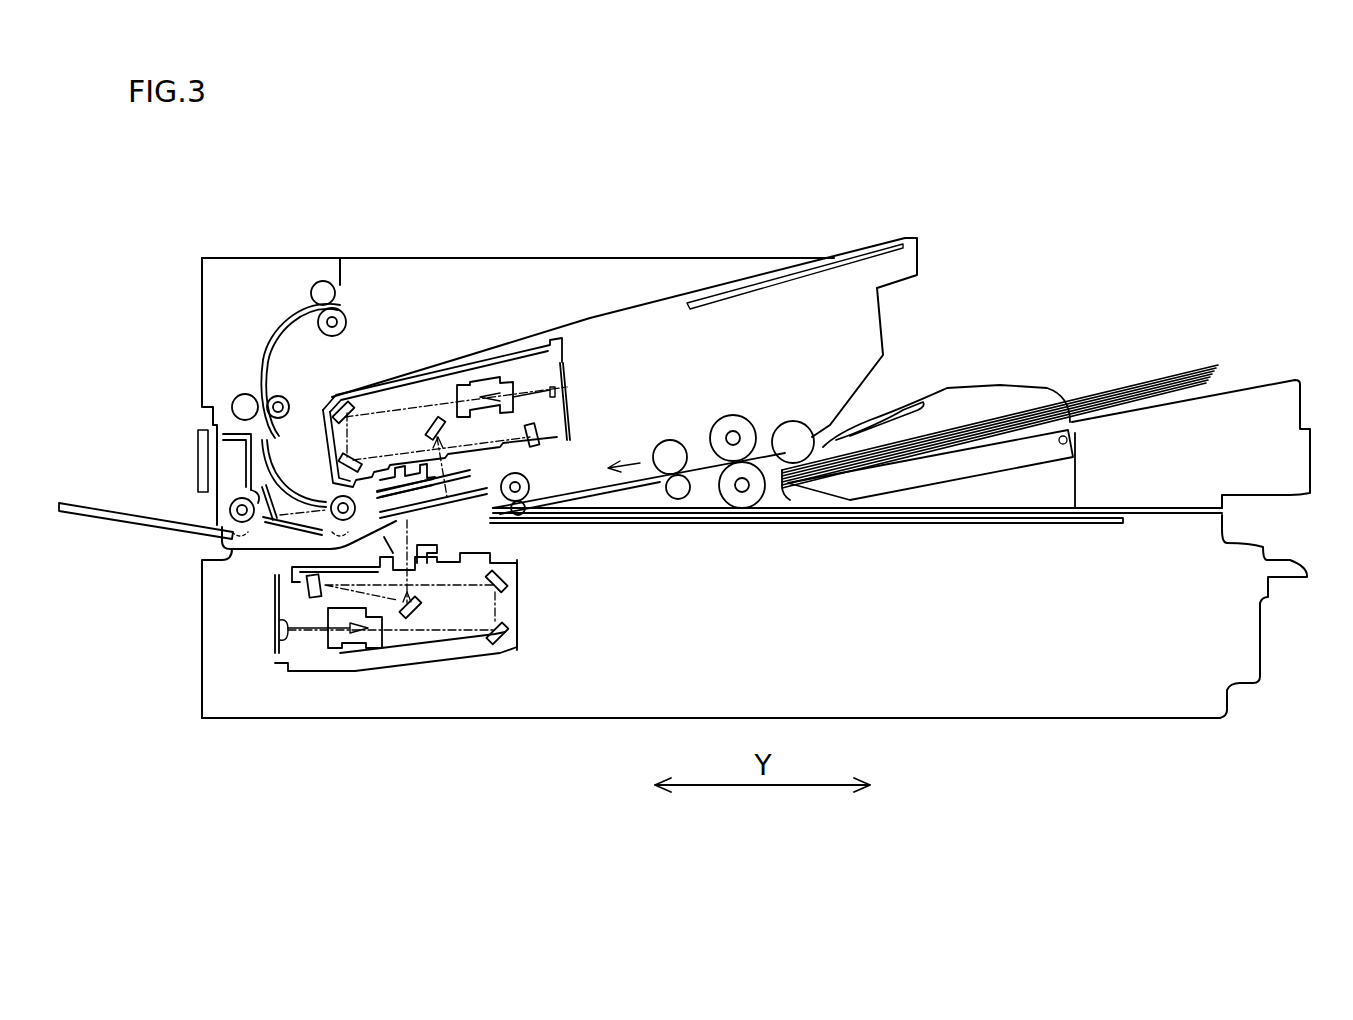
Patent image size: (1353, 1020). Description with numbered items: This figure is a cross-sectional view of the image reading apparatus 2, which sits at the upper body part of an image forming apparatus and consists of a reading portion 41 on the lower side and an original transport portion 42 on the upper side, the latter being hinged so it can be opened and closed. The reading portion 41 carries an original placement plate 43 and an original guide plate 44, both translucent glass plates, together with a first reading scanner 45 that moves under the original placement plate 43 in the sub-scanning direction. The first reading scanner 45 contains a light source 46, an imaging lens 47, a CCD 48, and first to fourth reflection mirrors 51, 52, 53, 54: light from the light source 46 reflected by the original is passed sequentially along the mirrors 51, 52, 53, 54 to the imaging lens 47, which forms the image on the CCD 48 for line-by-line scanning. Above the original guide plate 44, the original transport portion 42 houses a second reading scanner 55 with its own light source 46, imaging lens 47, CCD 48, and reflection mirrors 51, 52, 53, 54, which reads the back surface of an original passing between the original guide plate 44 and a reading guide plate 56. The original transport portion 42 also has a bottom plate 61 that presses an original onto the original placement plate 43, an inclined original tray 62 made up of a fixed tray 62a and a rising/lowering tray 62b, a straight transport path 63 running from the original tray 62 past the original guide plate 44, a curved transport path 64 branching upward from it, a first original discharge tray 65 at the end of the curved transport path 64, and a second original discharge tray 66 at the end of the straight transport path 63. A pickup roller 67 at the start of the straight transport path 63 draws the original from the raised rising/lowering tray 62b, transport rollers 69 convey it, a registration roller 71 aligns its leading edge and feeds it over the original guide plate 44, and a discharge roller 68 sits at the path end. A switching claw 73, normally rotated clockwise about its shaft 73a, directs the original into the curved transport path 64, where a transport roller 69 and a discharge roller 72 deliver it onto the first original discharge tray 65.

The image reading apparatus 2 is at (679, 127).
The reading portion 41 is at (1265, 635).
The original transport portion 42 is at (1276, 379).
The original placement plate 43 is at (1080, 525).
The original guide plate 44 is at (452, 518).
The first reading scanner 45 is at (520, 612).
The light source 46 is at (402, 470).
The imaging lens 47 is at (490, 382).
The CCD 48 is at (566, 375).
The first reflection mirror 51 is at (433, 418).
The second reflection mirror 52 is at (548, 430).
The third reflection mirror 53 is at (338, 467).
The fourth reflection mirror 54 is at (329, 402).
The second reading scanner 55 is at (455, 357).
The reading guide plate 56 is at (430, 483).
The bottom plate 61 is at (1117, 507).
The original tray 62 is at (1065, 297).
The fixed tray 62a is at (1247, 388).
The rising/lowering tray 62b is at (1035, 425).
The straight transport path 63 is at (645, 481).
The curved transport path 64 is at (280, 327).
The first original discharge tray 65 is at (583, 318).
The second original discharge tray 66 is at (112, 507).
The pickup roller 67 is at (789, 421).
The discharge roller 68 is at (230, 509).
The transport rollers 69 is at (243, 395).
The registration roller 71 is at (530, 478).
The discharge roller 72 is at (319, 281).
The switching claw 73 is at (290, 513).
The shaft 73a is at (258, 485).